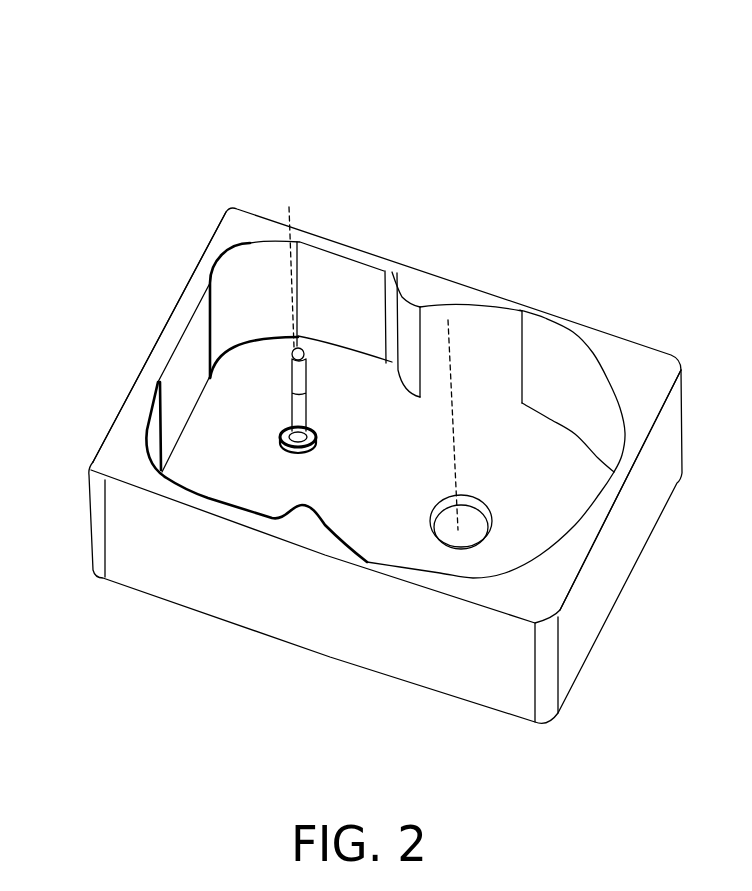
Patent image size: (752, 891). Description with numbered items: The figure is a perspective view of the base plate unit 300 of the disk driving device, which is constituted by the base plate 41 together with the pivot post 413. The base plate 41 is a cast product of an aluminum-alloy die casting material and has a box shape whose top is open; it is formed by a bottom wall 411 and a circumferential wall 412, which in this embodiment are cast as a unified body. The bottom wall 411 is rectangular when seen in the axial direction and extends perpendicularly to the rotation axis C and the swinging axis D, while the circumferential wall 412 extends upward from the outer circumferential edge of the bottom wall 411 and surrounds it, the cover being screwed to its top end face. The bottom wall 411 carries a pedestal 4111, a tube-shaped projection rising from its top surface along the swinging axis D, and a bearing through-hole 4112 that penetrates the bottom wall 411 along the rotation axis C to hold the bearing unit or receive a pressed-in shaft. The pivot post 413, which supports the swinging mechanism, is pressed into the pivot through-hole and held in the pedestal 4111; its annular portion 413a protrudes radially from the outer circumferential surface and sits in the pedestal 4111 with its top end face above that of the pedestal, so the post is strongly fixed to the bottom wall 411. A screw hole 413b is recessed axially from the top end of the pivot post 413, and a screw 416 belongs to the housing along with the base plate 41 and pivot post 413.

The base plate unit 300 is at (252, 80).
The base plate 41 is at (569, 332).
The bottom wall 411 is at (211, 464).
The pedestal 4111 is at (283, 431).
The bearing through-hole 4112 is at (447, 522).
The circumferential wall 412 is at (127, 412).
The pivot post 413 is at (300, 412).
The annular portion 413a is at (400, 310).
The screw hole 413b is at (301, 347).
The screw 416 is at (633, 355).
The rotation axis C is at (450, 373).
The swinging axis D is at (290, 262).